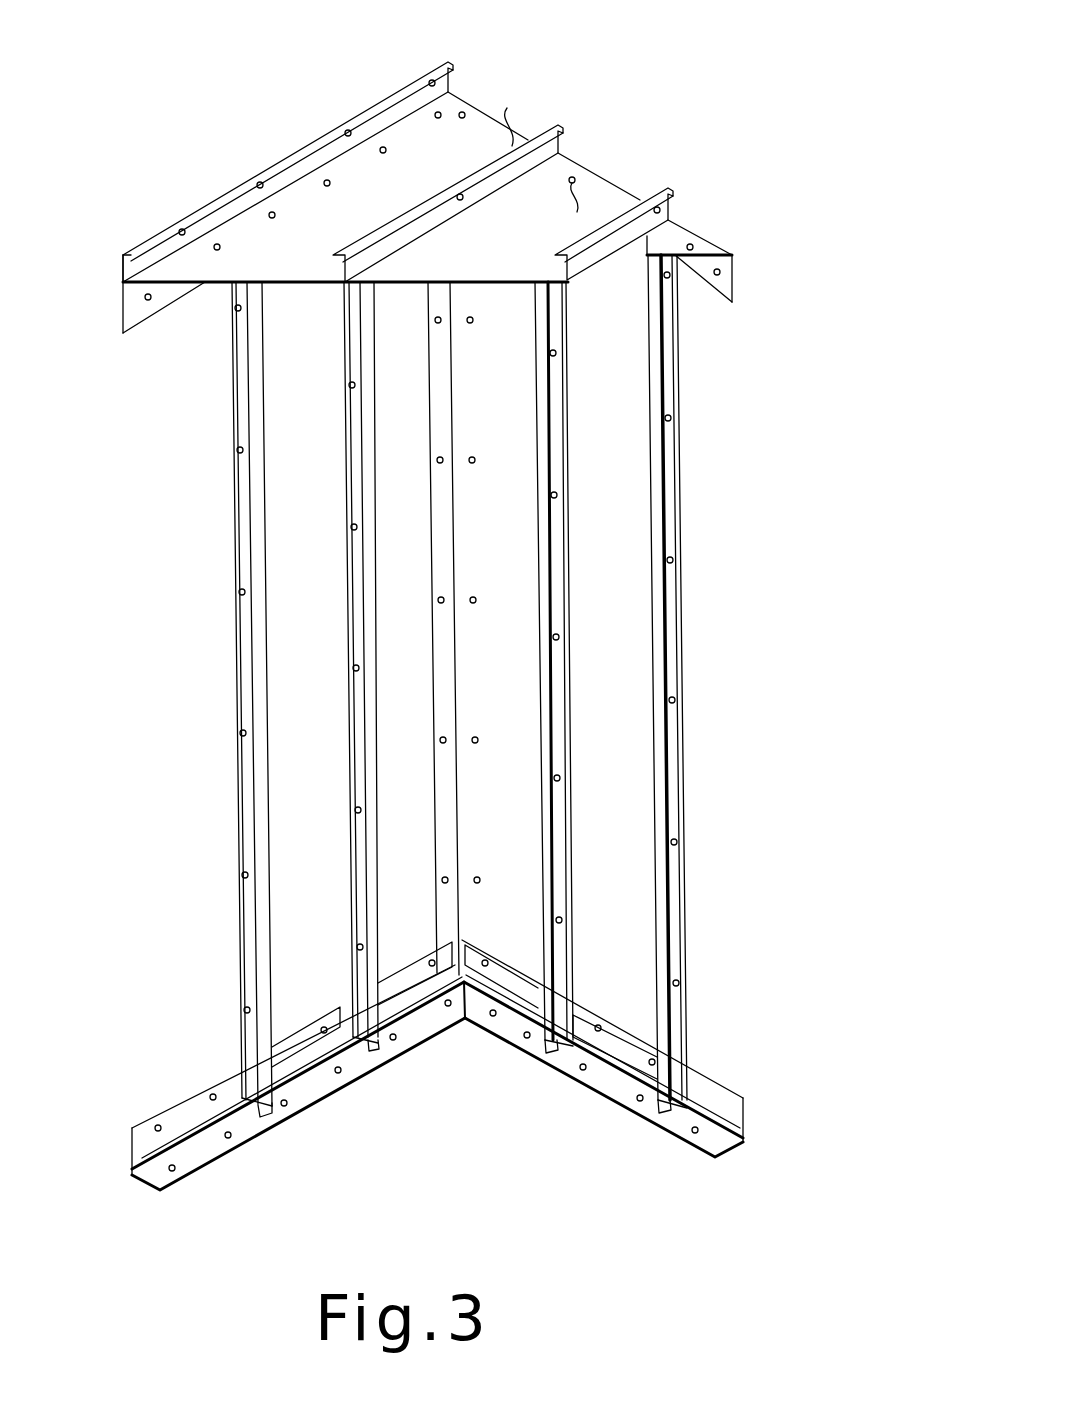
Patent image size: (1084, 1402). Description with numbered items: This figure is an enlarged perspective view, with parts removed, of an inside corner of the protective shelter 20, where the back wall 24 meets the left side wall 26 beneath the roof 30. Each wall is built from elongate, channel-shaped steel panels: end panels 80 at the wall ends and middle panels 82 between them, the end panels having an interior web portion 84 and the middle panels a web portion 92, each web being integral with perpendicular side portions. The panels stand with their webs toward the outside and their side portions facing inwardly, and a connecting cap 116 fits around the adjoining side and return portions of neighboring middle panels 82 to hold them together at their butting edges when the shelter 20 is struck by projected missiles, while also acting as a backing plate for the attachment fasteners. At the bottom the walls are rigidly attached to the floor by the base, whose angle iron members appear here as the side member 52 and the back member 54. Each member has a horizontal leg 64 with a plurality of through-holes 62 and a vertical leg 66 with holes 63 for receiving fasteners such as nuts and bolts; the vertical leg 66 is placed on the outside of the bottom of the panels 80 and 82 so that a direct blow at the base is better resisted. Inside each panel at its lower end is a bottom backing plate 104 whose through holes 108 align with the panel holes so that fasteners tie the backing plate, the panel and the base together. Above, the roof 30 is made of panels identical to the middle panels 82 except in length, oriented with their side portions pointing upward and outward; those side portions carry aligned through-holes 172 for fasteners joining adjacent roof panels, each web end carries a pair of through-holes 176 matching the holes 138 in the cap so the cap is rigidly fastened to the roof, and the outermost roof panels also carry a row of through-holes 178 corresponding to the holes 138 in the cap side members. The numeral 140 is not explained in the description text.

The protective shelter 20 is at (632, 178).
The back wall 24 is at (690, 688).
The left side wall 26 is at (233, 751).
The roof 30 is at (592, 165).
The side member 52 is at (318, 1094).
The back member 54 is at (666, 1129).
The through-holes 62 is at (227, 1139).
The holes 63 is at (157, 1132).
The horizontal leg 64 is at (272, 1136).
The vertical leg 66 is at (176, 1105).
The end panel 80 is at (430, 845).
The middle panel 82 is at (330, 885).
The interior web portion 84 is at (500, 383).
The web portion 92 is at (615, 458).
The bottom backing plate 104 is at (282, 1024).
The through holes 108 is at (485, 966).
The connecting cap 116 is at (248, 812).
The holes 138 is at (696, 240).
The top track end plate hole 140 is at (716, 277).
The through-holes 172 is at (457, 86).
The through-holes 176 is at (507, 108).
The through-holes 178 is at (465, 115).